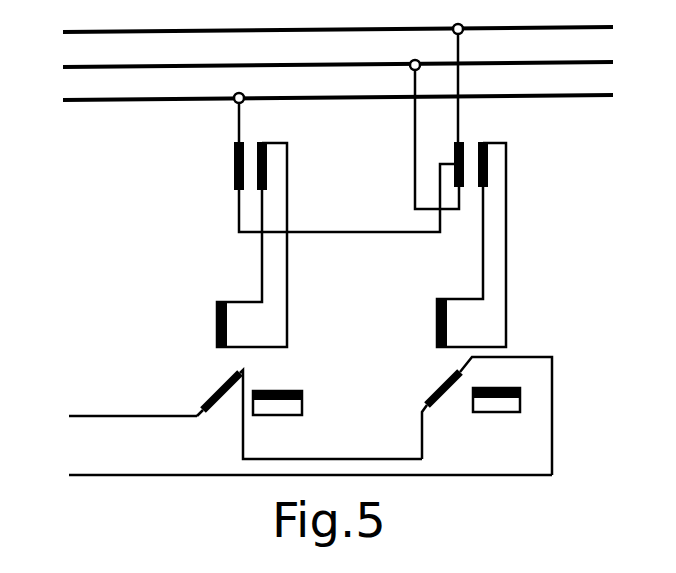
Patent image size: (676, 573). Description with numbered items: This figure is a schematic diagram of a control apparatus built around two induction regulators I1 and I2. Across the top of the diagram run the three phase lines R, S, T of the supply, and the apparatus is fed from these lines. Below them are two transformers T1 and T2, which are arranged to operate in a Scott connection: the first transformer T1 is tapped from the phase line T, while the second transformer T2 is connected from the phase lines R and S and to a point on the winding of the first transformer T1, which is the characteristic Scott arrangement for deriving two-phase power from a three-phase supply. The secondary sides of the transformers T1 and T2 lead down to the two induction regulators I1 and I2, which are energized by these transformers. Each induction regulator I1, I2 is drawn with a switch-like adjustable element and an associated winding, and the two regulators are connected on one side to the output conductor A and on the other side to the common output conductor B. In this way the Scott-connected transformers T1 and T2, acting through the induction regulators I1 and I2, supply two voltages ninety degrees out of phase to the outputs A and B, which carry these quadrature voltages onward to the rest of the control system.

The supply phase line R is at (322, 34).
The supply phase line S is at (322, 69).
The supply phase line T is at (322, 102).
The transformer T1 is at (327, 220).
The transformer T2 is at (477, 185).
The induction regulator I1 is at (304, 409).
The induction regulator I2 is at (479, 416).
The output terminal A is at (116, 417).
The output terminal B is at (294, 477).